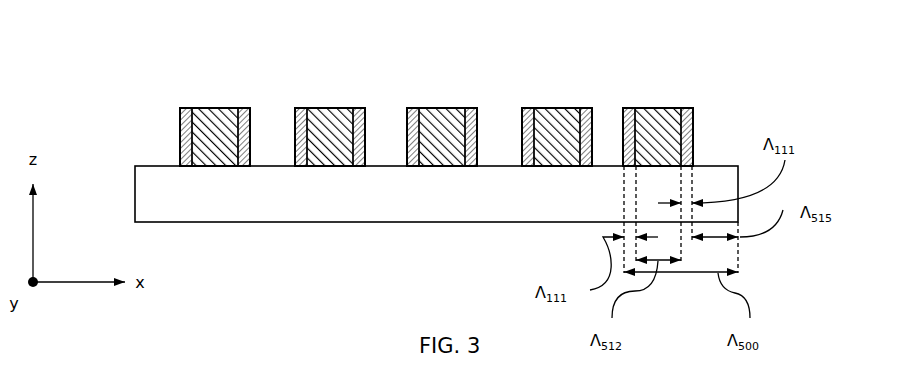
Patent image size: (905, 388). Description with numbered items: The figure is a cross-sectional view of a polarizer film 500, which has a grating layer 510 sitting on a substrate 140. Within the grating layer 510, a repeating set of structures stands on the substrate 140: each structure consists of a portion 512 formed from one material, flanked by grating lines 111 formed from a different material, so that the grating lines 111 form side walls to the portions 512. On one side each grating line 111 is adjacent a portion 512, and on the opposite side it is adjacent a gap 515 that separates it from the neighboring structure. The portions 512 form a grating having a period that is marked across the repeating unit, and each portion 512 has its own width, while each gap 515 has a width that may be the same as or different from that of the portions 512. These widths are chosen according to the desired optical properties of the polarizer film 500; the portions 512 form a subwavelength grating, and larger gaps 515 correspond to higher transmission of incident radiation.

The polarizer film 500 is at (66, 86).
The grating layer 510 is at (742, 136).
The portion 512 is at (215, 108).
The grating line 111 is at (250, 108).
The gap 515 is at (257, 146).
The substrate 140 is at (421, 204).